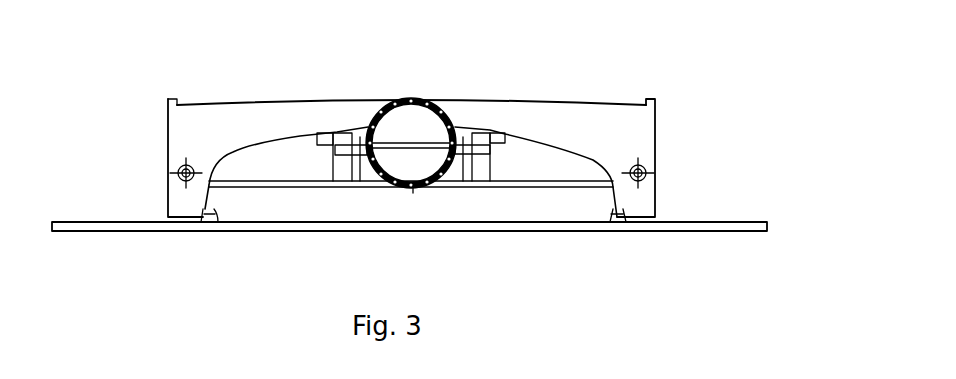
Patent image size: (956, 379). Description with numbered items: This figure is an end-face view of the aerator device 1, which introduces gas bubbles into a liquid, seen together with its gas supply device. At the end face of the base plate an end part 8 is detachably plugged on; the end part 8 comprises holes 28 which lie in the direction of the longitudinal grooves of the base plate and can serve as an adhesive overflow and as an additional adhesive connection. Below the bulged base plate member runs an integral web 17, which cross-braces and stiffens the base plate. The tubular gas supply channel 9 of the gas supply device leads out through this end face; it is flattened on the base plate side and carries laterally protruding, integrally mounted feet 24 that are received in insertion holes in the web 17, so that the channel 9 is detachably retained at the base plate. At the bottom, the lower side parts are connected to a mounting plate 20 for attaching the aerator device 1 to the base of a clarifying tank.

The aerator device 1 is at (672, 62).
The end part 8 is at (231, 145).
The tubular gas supply channel 9 is at (410, 112).
The web 17 is at (577, 183).
The mounting plate 20 is at (698, 226).
The feet 24 is at (483, 133).
The holes 28 is at (172, 173).